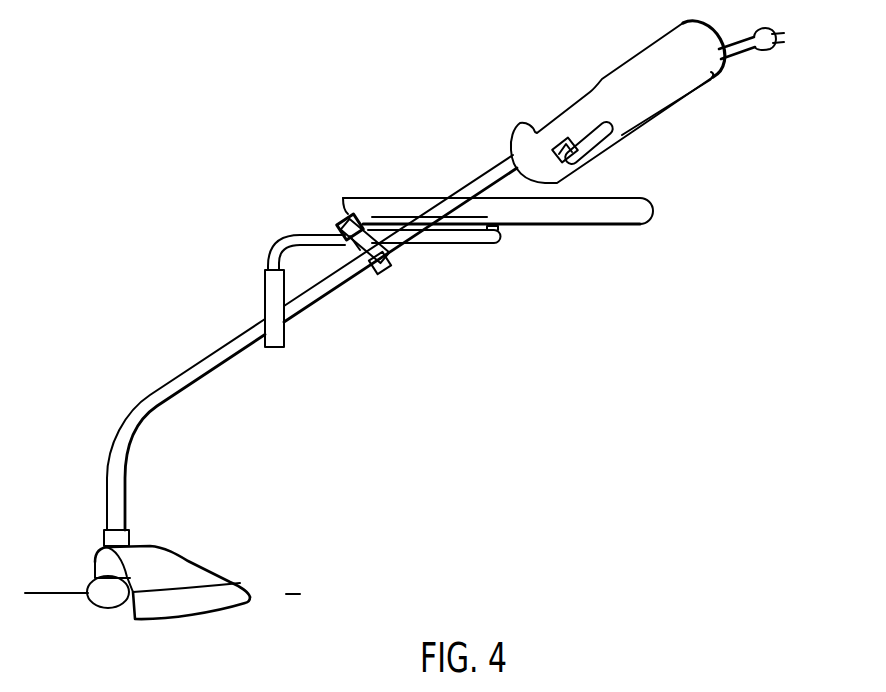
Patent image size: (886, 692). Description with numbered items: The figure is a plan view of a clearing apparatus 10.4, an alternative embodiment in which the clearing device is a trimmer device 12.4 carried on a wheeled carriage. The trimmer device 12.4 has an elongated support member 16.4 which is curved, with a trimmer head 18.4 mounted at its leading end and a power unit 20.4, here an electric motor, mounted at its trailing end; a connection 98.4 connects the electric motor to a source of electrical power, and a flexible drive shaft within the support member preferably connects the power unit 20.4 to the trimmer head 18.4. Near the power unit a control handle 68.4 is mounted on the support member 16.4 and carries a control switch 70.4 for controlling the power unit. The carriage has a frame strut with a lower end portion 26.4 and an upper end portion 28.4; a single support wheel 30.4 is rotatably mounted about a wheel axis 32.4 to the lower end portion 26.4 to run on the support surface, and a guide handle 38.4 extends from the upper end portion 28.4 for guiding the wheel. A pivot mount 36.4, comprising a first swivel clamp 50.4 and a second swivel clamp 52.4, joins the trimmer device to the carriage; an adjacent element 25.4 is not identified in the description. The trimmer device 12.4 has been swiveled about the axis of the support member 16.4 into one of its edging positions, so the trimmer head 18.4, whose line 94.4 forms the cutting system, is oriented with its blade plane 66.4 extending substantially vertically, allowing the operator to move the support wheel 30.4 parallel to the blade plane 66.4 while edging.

The clearing apparatus 10.4 is at (256, 158).
The trimmer device 12.4 is at (456, 149).
The elongated support member 16.4 is at (306, 311).
The trimmer head 18.4 is at (240, 520).
The power unit 20.4 is at (673, 80).
The clamp bolt 25.4 is at (343, 217).
The lower end portion 26.4 is at (470, 243).
The upper end portion 28.4 is at (317, 234).
The support wheel 30.4 is at (648, 214).
The wheel axis 32.4 is at (500, 230).
The pivot mount 36.4 is at (410, 267).
The guide handle 38.4 is at (273, 287).
The first swivel clamp 50.4 is at (356, 275).
The second swivel clamp 52.4 is at (380, 258).
The blade plane 66.4 is at (298, 594).
The control handle 68.4 is at (570, 125).
The control switch 70.4 is at (565, 148).
The line 94.4 is at (40, 593).
The connection 98.4 is at (757, 57).